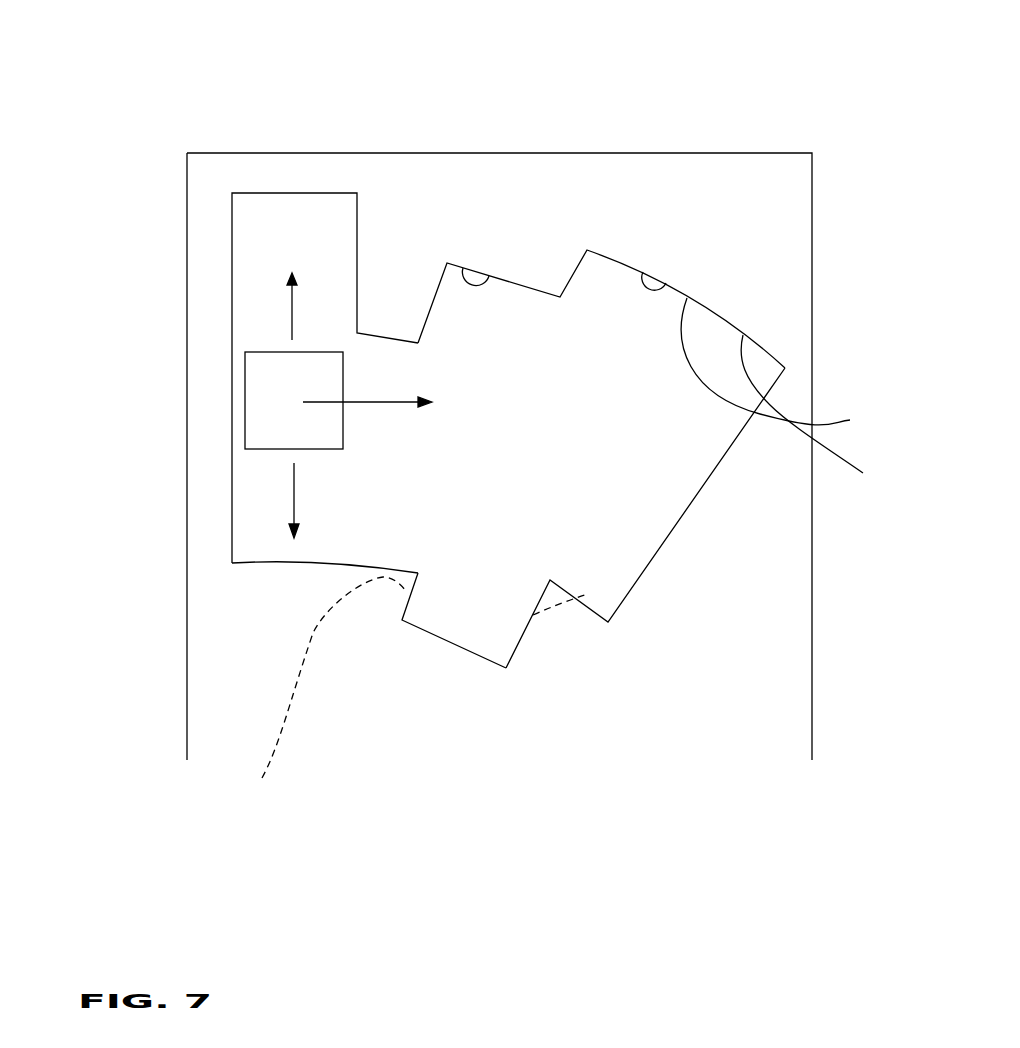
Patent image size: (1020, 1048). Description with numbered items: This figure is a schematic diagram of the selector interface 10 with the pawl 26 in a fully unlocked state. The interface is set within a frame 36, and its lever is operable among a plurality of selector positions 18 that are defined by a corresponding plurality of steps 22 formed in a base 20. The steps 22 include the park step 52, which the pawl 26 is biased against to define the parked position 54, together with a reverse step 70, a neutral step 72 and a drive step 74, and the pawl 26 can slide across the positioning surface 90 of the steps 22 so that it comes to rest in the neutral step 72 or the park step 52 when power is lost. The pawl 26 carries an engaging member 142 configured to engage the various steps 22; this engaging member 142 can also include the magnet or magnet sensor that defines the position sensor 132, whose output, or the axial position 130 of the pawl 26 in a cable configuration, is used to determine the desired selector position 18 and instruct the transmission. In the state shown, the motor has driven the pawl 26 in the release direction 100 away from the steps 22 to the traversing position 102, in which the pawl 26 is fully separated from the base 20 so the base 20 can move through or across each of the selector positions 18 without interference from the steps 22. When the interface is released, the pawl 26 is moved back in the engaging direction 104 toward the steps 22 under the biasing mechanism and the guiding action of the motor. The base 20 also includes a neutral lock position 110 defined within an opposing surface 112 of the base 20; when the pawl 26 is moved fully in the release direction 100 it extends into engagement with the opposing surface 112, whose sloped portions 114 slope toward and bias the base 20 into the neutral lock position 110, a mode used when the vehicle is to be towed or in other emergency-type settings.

The selector interface 10 is at (158, 103).
The selector positions 18 is at (328, 130).
The base 20 is at (765, 320).
The steps 22 is at (524, 272).
The pawl 26 is at (245, 372).
The frame 36 is at (175, 653).
The park step 52 is at (253, 193).
The parked position 54 is at (218, 242).
The reverse step 70 is at (461, 273).
The neutral step 72 is at (645, 273).
The drive step 74 is at (786, 366).
The positioning surface 90 is at (858, 508).
The release direction 100 is at (293, 488).
The traversing position 102 is at (362, 468).
The engaging direction 104 is at (290, 312).
The neutral lock position 110 is at (420, 632).
The opposing surface 112 is at (278, 560).
The sloped portions 114 is at (404, 694).
The axial position 130 is at (350, 445).
The position sensor 132 is at (243, 450).
The engaging member 142 is at (315, 368).